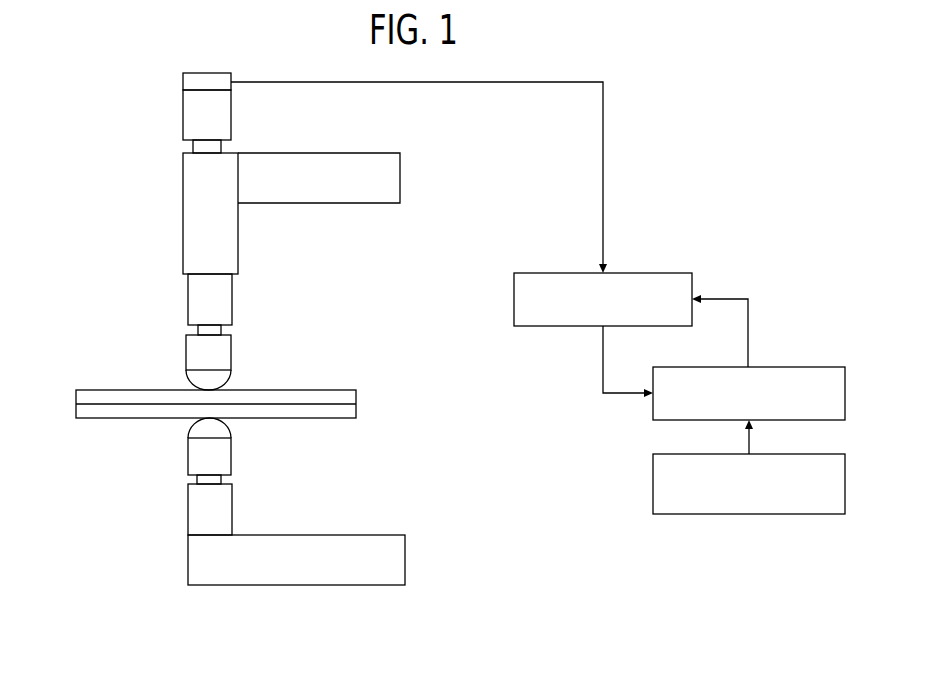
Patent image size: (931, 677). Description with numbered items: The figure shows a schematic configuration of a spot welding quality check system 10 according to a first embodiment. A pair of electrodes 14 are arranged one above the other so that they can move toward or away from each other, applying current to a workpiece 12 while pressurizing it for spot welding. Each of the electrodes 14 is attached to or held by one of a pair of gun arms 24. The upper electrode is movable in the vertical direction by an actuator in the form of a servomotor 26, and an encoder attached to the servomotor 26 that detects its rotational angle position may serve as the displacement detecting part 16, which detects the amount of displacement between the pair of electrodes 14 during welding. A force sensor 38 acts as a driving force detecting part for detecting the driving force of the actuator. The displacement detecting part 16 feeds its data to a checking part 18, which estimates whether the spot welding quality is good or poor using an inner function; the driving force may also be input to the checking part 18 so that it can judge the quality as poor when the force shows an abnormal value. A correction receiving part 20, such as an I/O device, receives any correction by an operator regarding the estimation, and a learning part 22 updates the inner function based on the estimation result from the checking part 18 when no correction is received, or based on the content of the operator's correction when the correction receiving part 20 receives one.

The spot welding quality check system 10 is at (86, 184).
The workpiece 12 is at (108, 418).
The electrode 14 is at (231, 350).
The displacement detecting part 16 is at (183, 80).
The checking part 18 is at (641, 273).
The correction receiving part 20 is at (653, 486).
The learning part 22 is at (797, 367).
The gun arm 24 is at (183, 219).
The servomotor 26 is at (183, 113).
The force sensor 38 is at (193, 145).